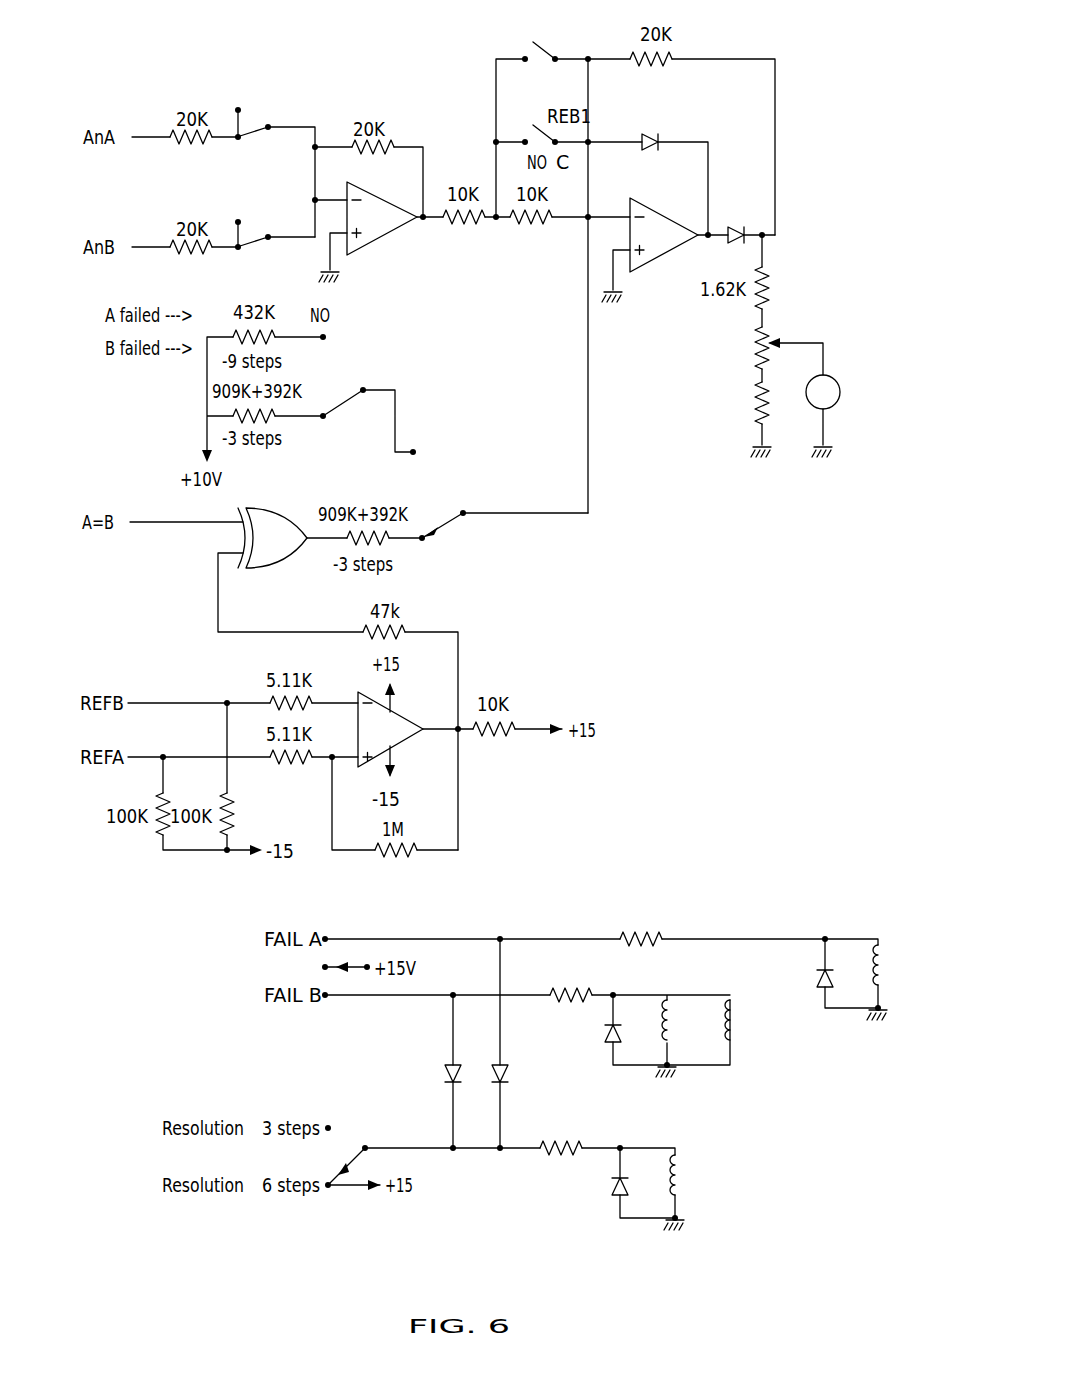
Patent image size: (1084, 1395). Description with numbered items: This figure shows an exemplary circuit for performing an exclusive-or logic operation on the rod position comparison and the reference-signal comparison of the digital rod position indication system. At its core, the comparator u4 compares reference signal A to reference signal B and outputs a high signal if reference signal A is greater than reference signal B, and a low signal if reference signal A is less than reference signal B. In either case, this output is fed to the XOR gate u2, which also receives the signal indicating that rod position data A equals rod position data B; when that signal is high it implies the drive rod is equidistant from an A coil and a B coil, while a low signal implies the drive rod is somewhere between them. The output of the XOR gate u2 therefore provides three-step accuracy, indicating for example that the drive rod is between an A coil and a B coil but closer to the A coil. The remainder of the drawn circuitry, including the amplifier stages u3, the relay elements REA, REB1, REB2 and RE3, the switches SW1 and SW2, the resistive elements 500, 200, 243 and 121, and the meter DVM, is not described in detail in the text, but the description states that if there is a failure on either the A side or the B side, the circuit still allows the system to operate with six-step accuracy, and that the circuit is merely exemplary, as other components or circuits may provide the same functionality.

The relay A contacts REA is at (248, 125).
The relay B1 contacts REB1 is at (245, 235).
The relay B2 contacts REB2 is at (365, 404).
The relay 3 contacts RE3 is at (444, 530).
The XOR gate u2 is at (271, 533).
The operational amplifier u3 is at (381, 215).
The comparator u4 is at (389, 727).
The resolution switch SW1 is at (346, 1134).
The fail switch (3 position) SW2 is at (357, 938).
The digital voltmeter DVM is at (840, 377).
The 500 ohm potentiometer 500 is at (730, 344).
The 200 ohm resistor 200 is at (730, 400).
The 243 ohm resistor 243 is at (641, 925).
The 121 ohm resistor 121 is at (571, 981).